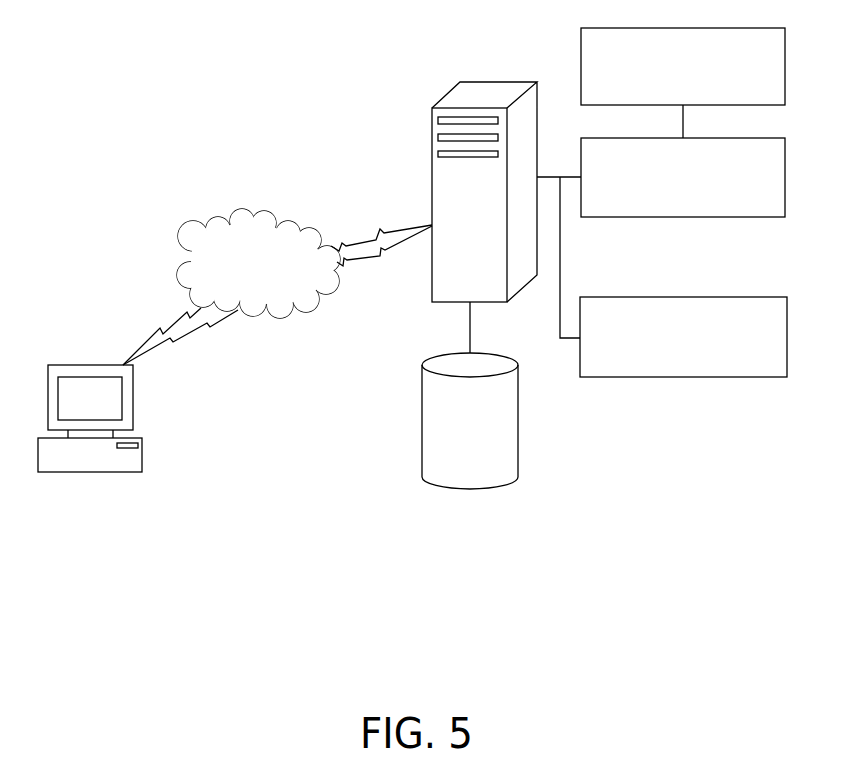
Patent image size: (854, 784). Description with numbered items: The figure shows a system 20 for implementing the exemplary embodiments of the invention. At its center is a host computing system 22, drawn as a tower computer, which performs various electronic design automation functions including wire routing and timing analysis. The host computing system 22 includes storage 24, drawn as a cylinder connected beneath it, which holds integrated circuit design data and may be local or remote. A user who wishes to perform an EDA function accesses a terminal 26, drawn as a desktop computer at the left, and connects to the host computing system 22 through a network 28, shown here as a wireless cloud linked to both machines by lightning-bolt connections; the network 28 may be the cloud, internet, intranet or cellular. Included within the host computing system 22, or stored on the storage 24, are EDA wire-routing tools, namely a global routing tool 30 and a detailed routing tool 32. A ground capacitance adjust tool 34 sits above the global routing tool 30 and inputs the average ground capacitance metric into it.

The system 20 is at (382, 90).
The host computing system 22 is at (483, 86).
The storage 24 is at (500, 477).
The terminal 26 is at (133, 398).
The network 28 is at (265, 212).
The global routing tool 30 is at (785, 175).
The detailed routing tool 32 is at (787, 335).
The ground capacitance adjust tool 34 is at (785, 63).